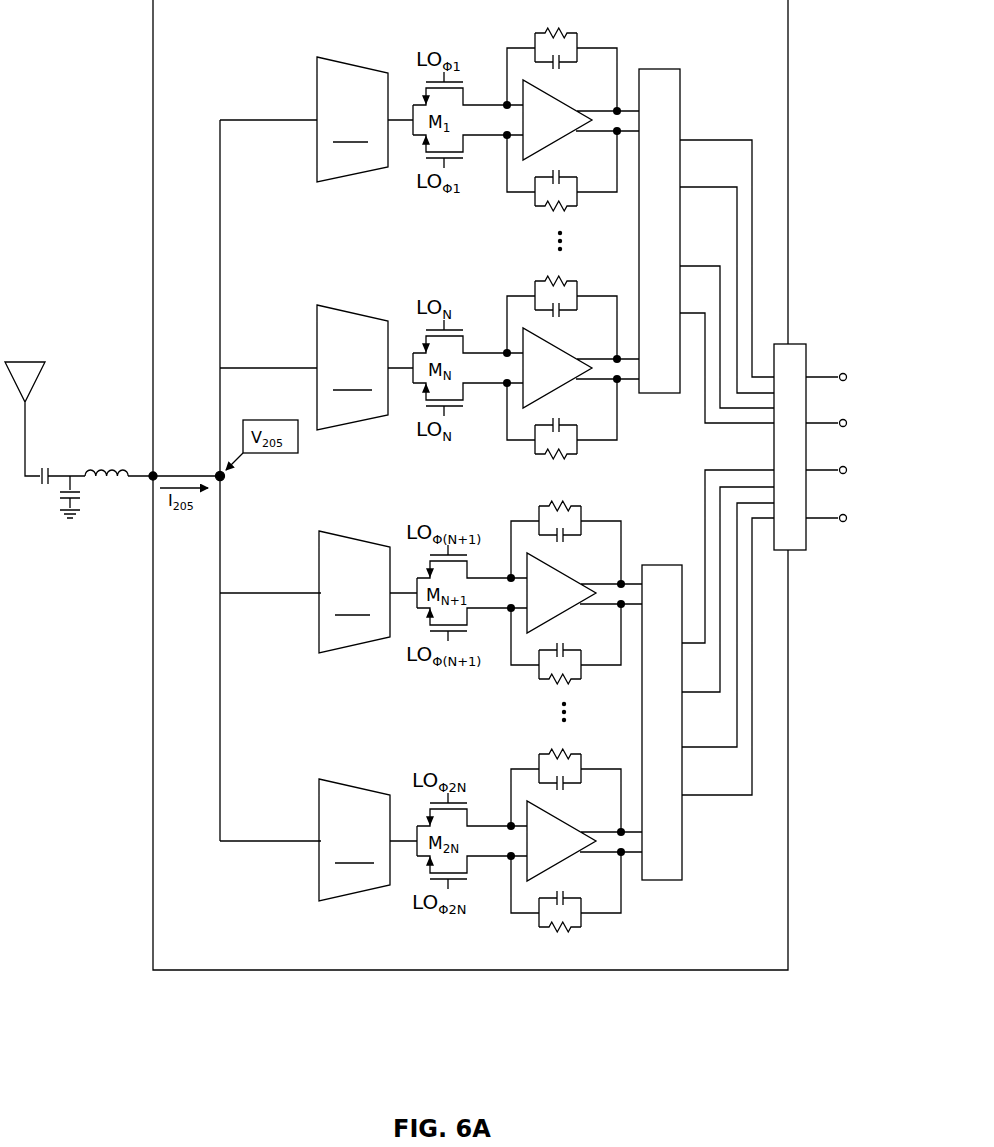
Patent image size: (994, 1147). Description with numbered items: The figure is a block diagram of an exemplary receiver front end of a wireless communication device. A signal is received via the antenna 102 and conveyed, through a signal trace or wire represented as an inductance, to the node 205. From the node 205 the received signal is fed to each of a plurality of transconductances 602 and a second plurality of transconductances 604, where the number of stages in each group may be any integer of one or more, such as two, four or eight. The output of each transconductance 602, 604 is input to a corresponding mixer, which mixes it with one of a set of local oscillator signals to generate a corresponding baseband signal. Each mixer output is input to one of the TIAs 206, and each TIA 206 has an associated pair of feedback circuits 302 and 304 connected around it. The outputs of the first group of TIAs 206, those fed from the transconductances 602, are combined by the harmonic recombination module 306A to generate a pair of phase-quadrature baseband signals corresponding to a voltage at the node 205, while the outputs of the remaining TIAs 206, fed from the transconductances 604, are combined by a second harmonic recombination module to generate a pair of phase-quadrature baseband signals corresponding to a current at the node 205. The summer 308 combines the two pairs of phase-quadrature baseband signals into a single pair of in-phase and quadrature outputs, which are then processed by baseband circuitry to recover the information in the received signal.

The antenna 102 is at (42, 352).
The node 205 is at (222, 479).
The transconductance 602 is at (352, 243).
The transconductance 604 is at (354, 716).
The TIA 206 is at (572, 480).
The feedback circuit 302 is at (581, 33).
The feedback circuit 304 is at (530, 210).
The harmonic recombination module 306A is at (697, 474).
The summer 308 is at (810, 447).